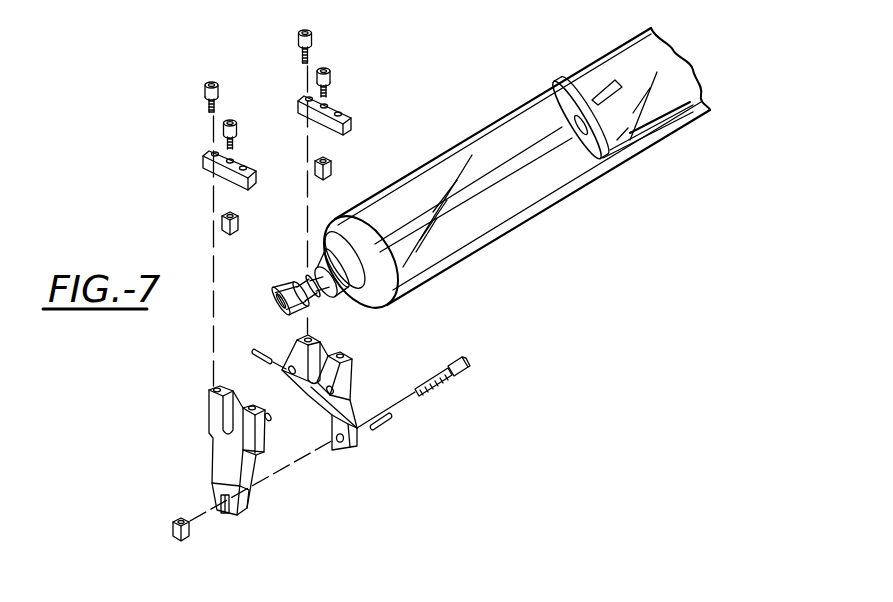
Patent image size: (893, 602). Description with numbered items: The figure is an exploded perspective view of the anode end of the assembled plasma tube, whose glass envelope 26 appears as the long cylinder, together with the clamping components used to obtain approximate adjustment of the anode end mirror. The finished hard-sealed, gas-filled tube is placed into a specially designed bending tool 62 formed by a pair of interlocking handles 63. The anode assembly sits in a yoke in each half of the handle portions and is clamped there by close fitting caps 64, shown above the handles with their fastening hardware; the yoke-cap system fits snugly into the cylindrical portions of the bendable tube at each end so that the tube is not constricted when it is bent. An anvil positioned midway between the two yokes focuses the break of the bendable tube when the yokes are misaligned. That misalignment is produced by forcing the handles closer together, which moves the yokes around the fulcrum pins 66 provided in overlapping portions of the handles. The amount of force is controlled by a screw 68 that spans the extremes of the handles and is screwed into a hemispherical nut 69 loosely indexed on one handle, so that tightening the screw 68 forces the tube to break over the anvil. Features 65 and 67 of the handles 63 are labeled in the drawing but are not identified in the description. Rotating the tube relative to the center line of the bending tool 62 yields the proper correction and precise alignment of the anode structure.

The glass envelope 26 is at (527, 216).
The bending tool 62 is at (309, 446).
The interlocking handles 63 is at (240, 510).
The caps 64 is at (297, 125).
The aperture 65 is at (271, 416).
The fulcrum pins 66 is at (428, 494).
The slot 67 is at (223, 507).
The screw 68 is at (452, 379).
The hemispherical nut 69 is at (172, 524).